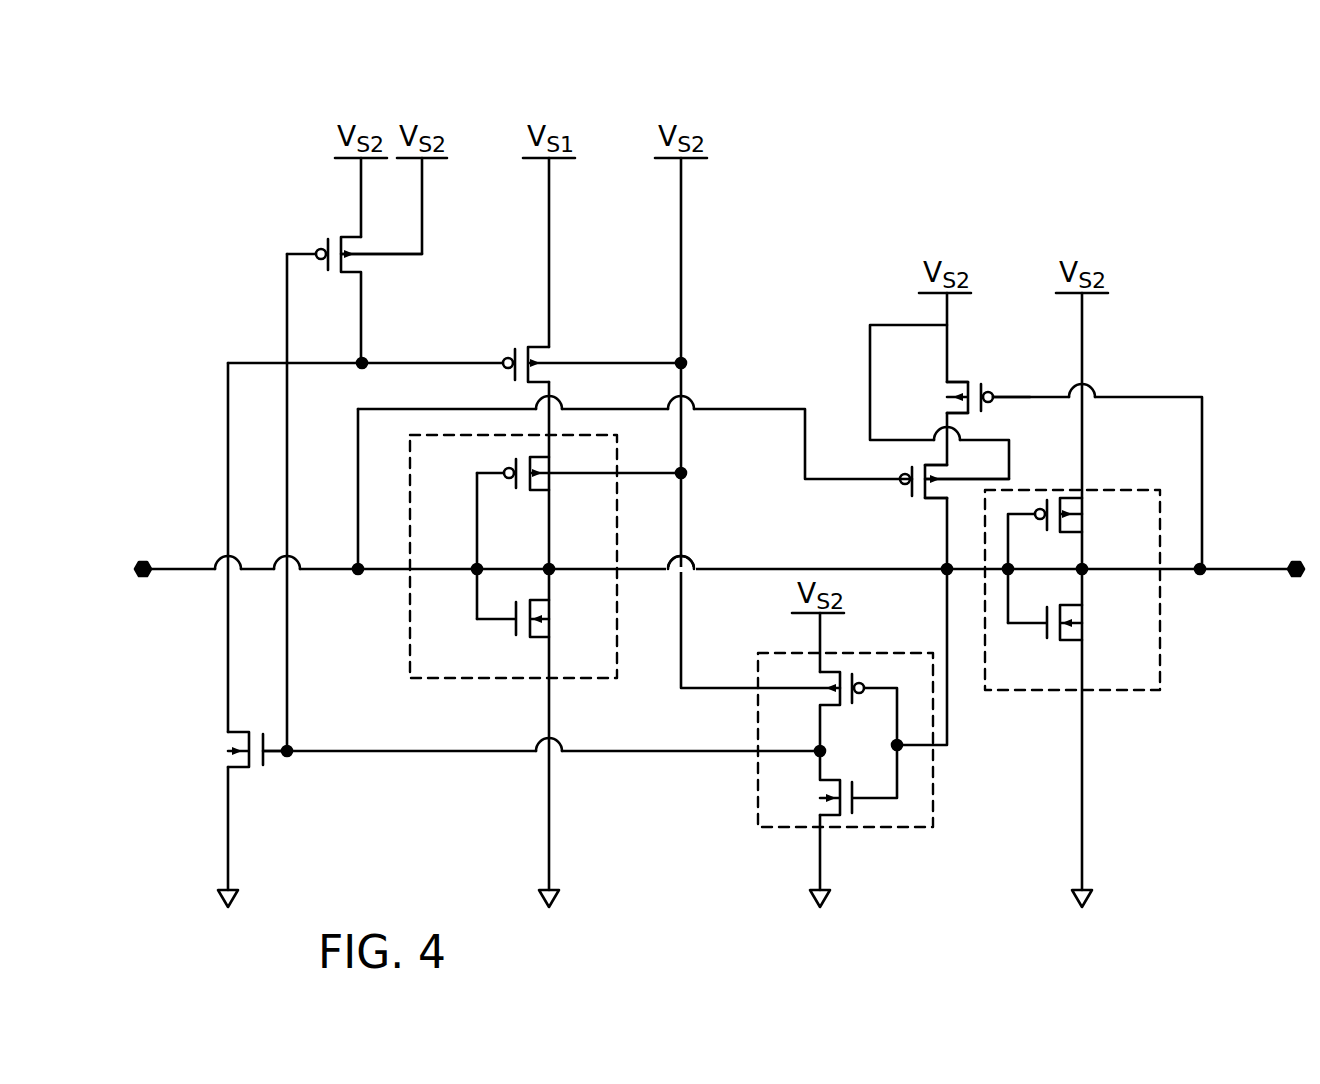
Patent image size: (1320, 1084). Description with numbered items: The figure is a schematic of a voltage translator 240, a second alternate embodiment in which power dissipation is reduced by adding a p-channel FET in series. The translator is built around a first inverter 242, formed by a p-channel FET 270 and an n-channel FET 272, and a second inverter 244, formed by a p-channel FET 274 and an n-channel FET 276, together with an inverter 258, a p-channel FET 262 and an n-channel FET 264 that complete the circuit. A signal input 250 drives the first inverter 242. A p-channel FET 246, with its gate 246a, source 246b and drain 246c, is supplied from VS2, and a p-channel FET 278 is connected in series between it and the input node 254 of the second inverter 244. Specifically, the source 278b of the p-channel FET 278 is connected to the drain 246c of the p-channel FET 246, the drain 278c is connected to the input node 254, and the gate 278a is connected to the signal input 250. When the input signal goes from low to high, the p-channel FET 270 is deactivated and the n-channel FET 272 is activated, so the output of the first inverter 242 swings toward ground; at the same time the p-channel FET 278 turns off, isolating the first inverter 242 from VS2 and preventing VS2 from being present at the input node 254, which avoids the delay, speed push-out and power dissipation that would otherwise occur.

The voltage translator 240 is at (1068, 128).
The first inverter 242 is at (617, 493).
The second inverter 244 is at (1125, 690).
The p-channel FET 246 is at (930, 394).
The gate of p-channel FET 246 246a is at (1025, 397).
The source of p-channel FET 246 246b is at (964, 383).
The drain of p-channel FET 246 246c is at (947, 413).
The signal input 250 is at (476, 569).
The input node 254 is at (945, 567).
The inverter 258 is at (758, 681).
The p-channel FET 262 is at (360, 246).
The n-channel FET 264 is at (222, 742).
The p-channel FET 270 is at (548, 455).
The n-channel FET 272 is at (549, 569).
The p-channel FET 274 is at (1098, 515).
The n-channel FET 276 is at (1092, 632).
The p-channel FET 278 is at (950, 475).
The gate of p-channel FET 278 278a is at (900, 483).
The source of p-channel FET 278 278b is at (937, 464).
The drain of p-channel FET 278 278c is at (947, 500).